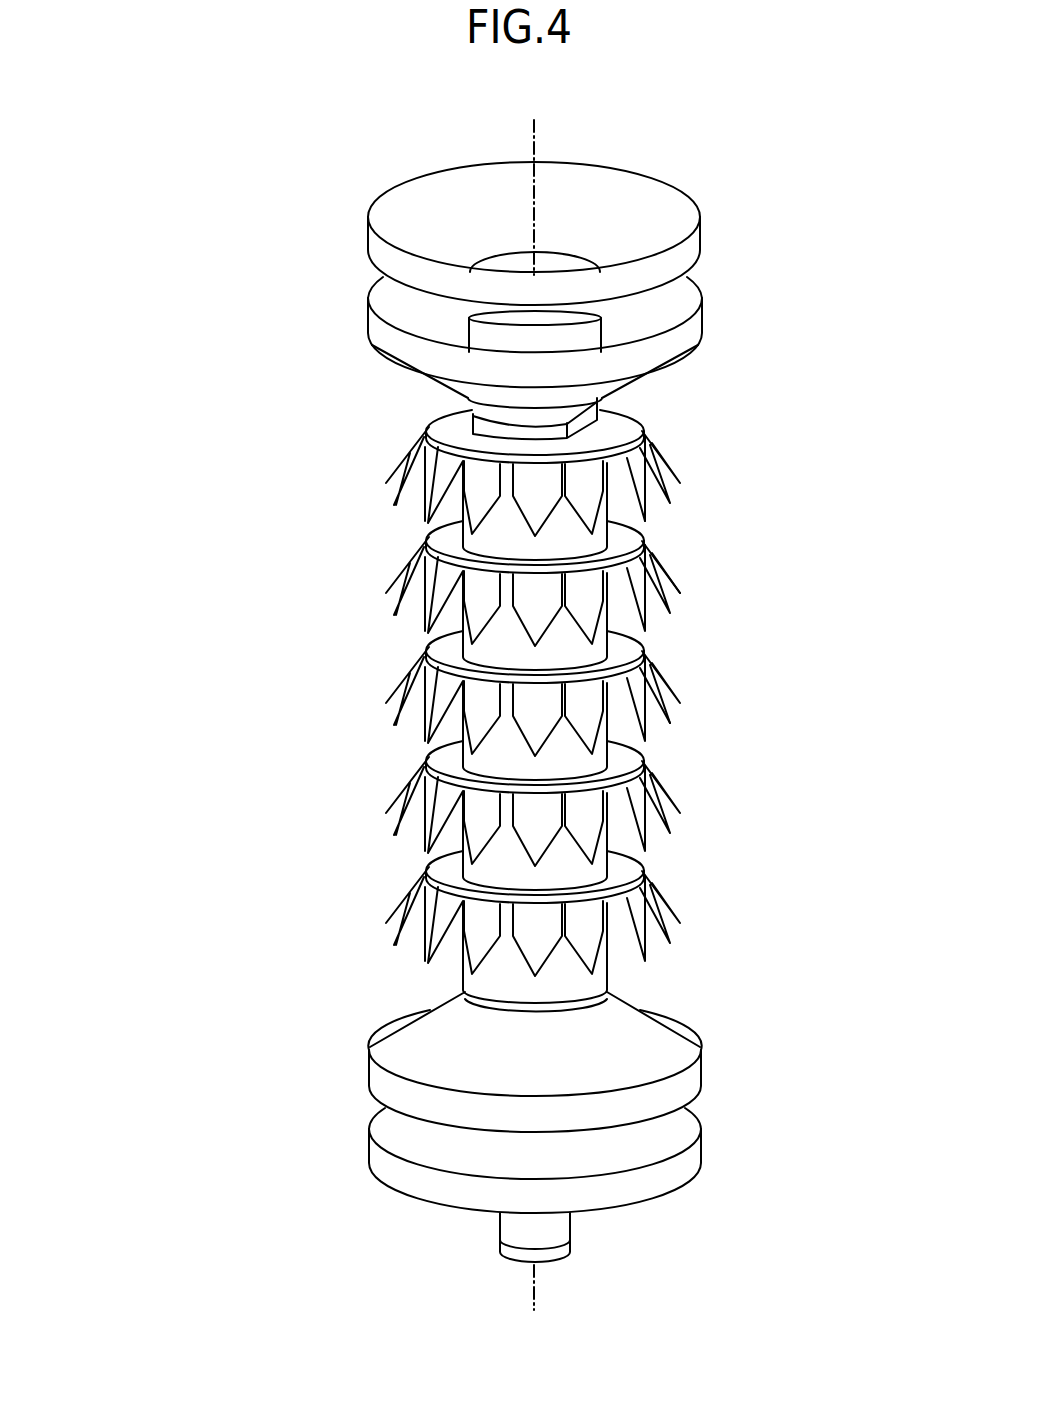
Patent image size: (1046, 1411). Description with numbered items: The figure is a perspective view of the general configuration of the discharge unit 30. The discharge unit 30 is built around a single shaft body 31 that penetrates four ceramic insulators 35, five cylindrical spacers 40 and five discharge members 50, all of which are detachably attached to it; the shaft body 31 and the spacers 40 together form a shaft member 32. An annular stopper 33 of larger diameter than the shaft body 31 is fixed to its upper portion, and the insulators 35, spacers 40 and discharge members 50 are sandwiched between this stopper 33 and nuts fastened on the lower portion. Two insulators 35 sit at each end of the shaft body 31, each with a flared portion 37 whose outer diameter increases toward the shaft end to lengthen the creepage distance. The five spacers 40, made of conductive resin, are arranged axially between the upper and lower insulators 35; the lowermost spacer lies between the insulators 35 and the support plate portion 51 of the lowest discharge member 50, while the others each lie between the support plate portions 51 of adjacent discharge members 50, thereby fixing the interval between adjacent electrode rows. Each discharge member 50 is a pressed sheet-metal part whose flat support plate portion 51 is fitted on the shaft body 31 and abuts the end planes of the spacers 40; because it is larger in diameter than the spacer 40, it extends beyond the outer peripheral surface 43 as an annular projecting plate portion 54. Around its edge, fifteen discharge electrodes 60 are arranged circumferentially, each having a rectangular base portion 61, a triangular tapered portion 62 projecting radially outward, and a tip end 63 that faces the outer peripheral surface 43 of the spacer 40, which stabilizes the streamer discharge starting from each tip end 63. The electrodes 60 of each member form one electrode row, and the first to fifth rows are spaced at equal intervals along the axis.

The discharge unit 30 is at (680, 160).
The shaft body 31 is at (517, 1237).
The shaft member 32 is at (632, 977).
The stopper 33 is at (598, 422).
The insulator 35 is at (366, 250).
The flared portion 37 is at (640, 298).
The spacer 40 is at (525, 740).
The outer peripheral surface 43 is at (578, 764).
The discharge member 50 is at (386, 440).
The support plate portion 51 is at (426, 526).
The projecting plate portion 54 is at (628, 536).
The discharge electrode 60 is at (556, 703).
The base portion 61 is at (627, 583).
The tapered portion 62 is at (633, 604).
The tip end 63 is at (638, 720).